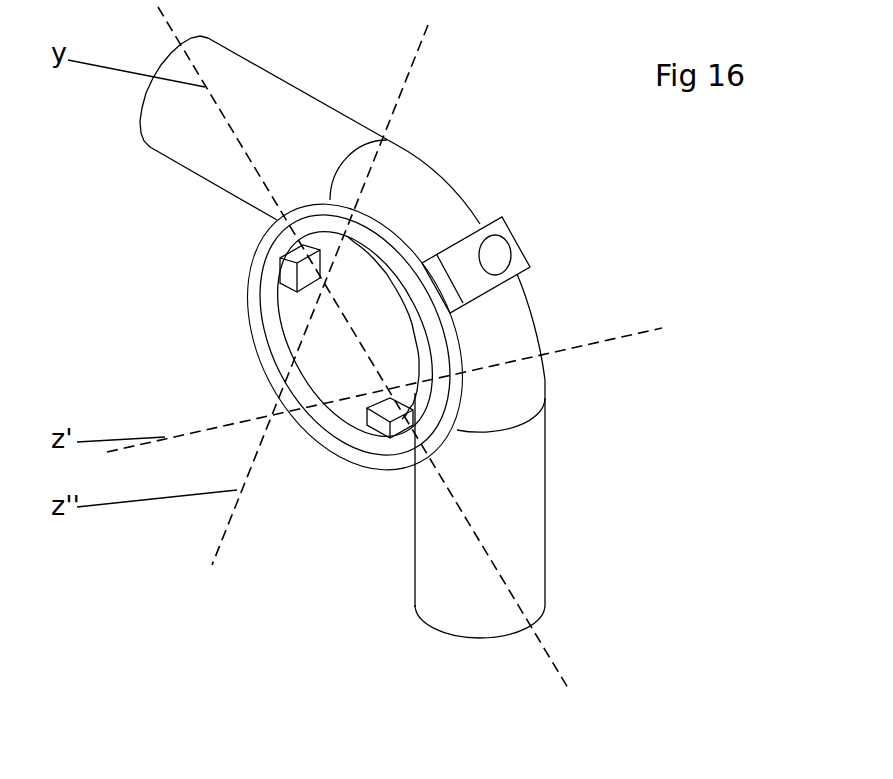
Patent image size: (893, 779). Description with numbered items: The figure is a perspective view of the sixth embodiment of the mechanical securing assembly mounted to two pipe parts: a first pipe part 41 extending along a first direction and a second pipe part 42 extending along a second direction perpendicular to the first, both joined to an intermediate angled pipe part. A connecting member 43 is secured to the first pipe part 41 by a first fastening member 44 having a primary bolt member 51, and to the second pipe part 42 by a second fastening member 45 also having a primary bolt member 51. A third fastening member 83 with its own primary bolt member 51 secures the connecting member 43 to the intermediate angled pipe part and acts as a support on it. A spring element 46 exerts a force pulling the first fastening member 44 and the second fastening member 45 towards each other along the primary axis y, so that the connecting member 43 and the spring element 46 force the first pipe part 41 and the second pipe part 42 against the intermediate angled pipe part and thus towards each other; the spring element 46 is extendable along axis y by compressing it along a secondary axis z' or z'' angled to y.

The first pipe part 41 is at (182, 131).
The second pipe part 42 is at (432, 563).
The connecting member 43 is at (232, 300).
The first fastening member 44 is at (277, 266).
The second fastening member 45 is at (363, 437).
The spring element 46 is at (265, 349).
The primary bolt member 51 is at (492, 255).
The third fastening member 83 is at (529, 245).